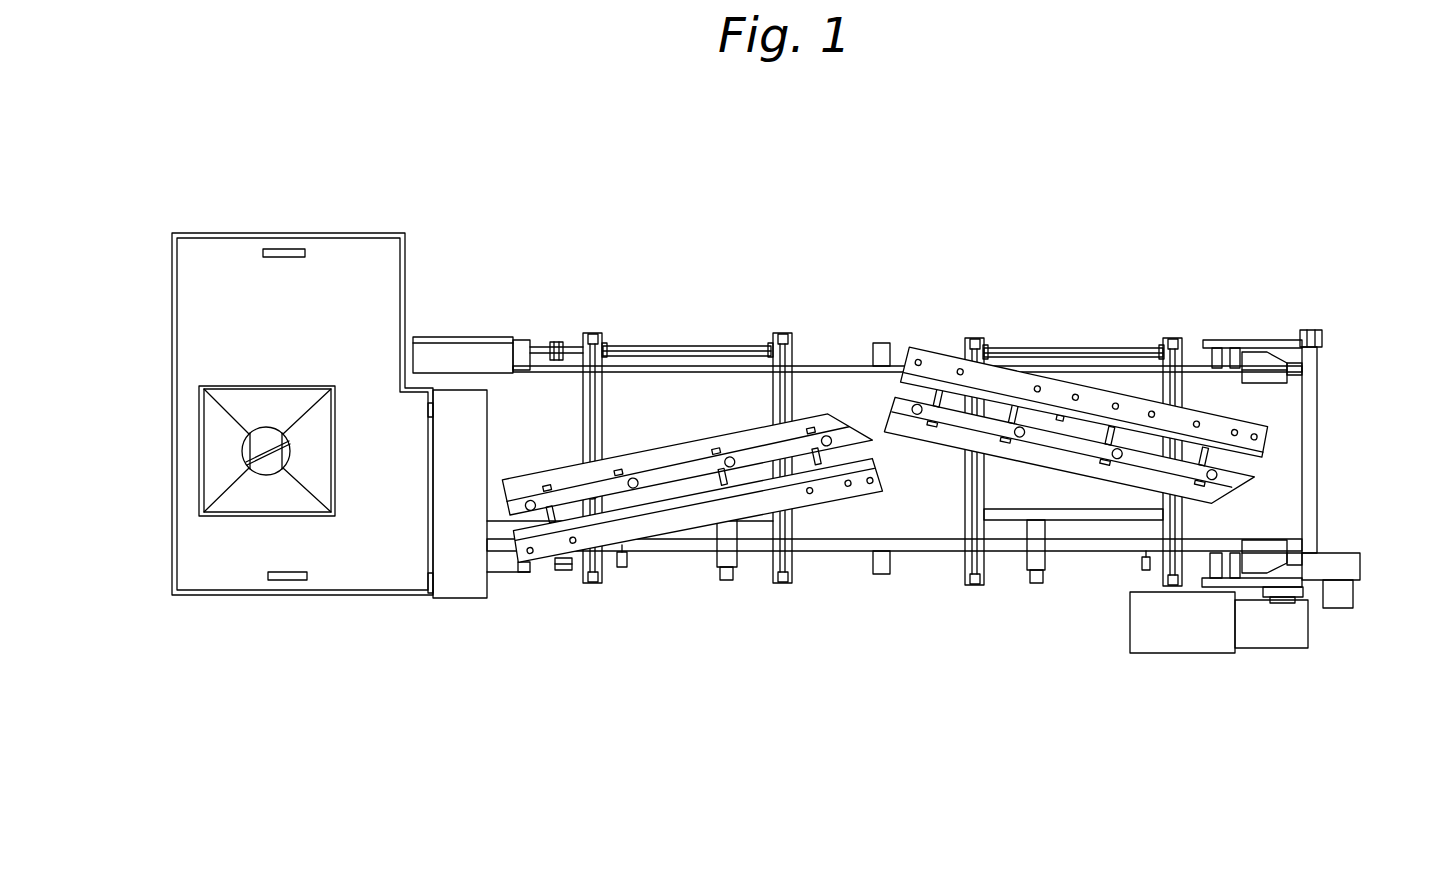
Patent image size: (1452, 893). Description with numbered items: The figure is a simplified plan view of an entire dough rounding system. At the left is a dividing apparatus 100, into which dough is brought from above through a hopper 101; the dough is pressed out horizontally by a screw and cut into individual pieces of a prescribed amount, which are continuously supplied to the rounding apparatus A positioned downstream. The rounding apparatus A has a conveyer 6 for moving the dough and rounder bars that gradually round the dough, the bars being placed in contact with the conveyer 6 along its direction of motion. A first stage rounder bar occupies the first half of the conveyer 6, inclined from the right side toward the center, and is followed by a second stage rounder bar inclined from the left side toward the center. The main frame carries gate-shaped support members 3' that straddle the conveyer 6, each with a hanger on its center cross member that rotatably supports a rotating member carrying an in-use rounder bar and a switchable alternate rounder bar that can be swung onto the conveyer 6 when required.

The dividing apparatus 100 is at (363, 227).
The hopper 101 is at (214, 455).
The rounding apparatus A is at (1022, 200).
The conveyer 6 is at (547, 434).
The gate-shaped support member 3' is at (614, 425).